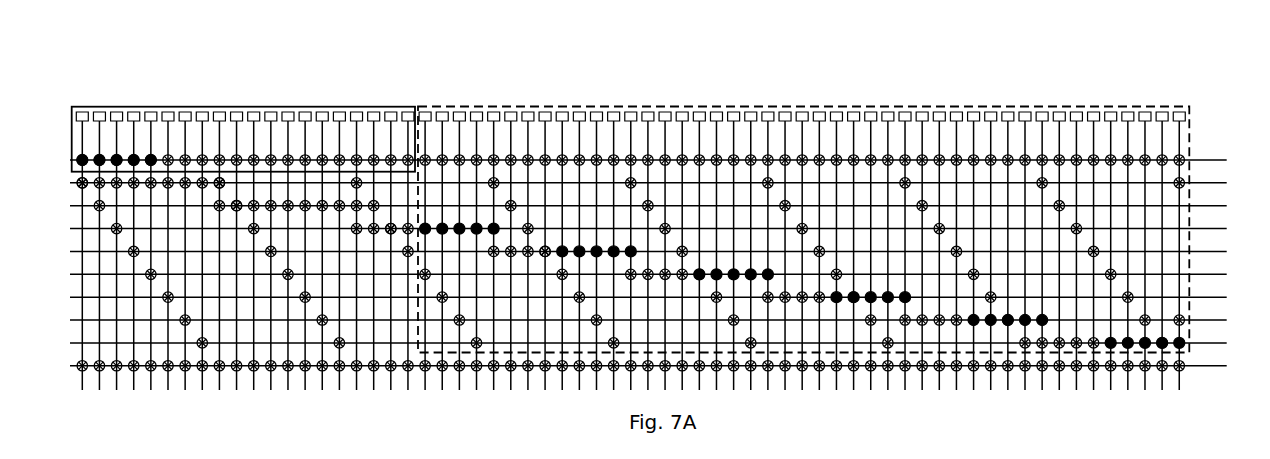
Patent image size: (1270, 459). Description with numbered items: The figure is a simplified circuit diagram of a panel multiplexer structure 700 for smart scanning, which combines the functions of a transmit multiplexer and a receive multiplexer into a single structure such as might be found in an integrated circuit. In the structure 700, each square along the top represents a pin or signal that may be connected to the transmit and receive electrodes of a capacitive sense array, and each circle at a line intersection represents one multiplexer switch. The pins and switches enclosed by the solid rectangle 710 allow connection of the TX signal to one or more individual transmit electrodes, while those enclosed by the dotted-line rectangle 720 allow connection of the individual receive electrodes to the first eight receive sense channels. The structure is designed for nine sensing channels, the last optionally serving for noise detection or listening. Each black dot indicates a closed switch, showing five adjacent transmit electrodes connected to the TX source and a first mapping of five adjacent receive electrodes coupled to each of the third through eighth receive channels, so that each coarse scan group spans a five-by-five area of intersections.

The multiplexer structure 700 is at (988, 91).
The solid rectangle 710 is at (246, 107).
The dotted-line rectangle 720 is at (536, 107).